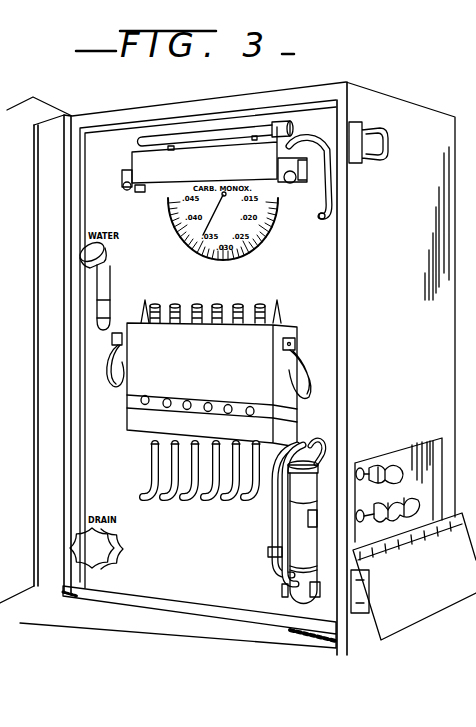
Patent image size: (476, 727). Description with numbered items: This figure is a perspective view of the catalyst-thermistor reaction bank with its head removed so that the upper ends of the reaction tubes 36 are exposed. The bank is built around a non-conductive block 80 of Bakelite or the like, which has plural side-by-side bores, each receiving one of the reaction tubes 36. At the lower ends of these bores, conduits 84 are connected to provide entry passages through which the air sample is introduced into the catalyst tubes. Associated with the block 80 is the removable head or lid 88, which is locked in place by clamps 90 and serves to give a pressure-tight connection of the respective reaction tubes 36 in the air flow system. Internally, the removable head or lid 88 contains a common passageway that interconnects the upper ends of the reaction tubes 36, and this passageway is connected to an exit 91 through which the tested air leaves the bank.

The removable head or lid 88 is at (137, 157).
The exit 91 is at (323, 198).
The reaction tubes 36 is at (156, 307).
The clamps 90 is at (114, 367).
The non-conductive block 80 is at (135, 392).
The conduits 84 is at (156, 471).